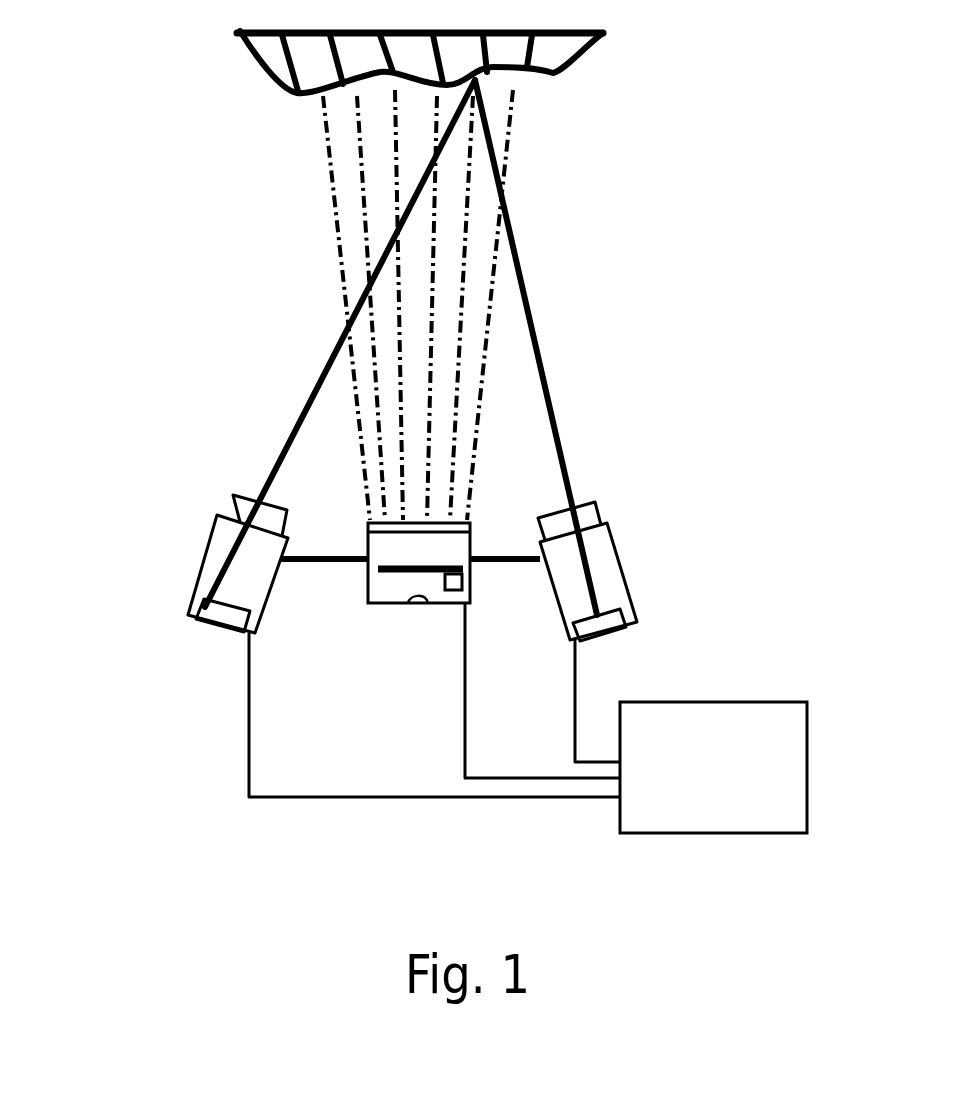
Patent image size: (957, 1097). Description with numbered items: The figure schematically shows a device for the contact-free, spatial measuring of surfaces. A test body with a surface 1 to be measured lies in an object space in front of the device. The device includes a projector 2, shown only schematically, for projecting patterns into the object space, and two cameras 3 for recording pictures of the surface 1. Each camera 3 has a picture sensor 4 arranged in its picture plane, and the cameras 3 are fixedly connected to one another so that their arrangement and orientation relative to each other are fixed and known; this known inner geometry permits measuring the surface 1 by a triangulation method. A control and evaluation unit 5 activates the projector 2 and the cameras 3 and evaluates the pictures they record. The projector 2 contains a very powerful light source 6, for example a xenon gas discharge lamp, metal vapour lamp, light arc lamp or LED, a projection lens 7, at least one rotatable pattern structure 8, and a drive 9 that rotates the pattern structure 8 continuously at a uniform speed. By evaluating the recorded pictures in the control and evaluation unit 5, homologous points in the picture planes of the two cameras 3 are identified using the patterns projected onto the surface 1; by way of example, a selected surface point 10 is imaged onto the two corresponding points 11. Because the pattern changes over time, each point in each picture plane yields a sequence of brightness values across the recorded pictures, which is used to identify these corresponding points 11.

The surface 1 is at (272, 90).
The projector 2 is at (450, 603).
The camera 3 is at (207, 541).
The picture sensor 4 is at (236, 632).
The control and evaluation unit 5 is at (710, 835).
The light source 6 is at (420, 600).
The projection lens 7 is at (457, 518).
The rotatable pattern structure 8 is at (395, 560).
The drive 9 is at (470, 598).
The selected surface point 10 is at (485, 85).
The corresponding points 11 is at (245, 600).